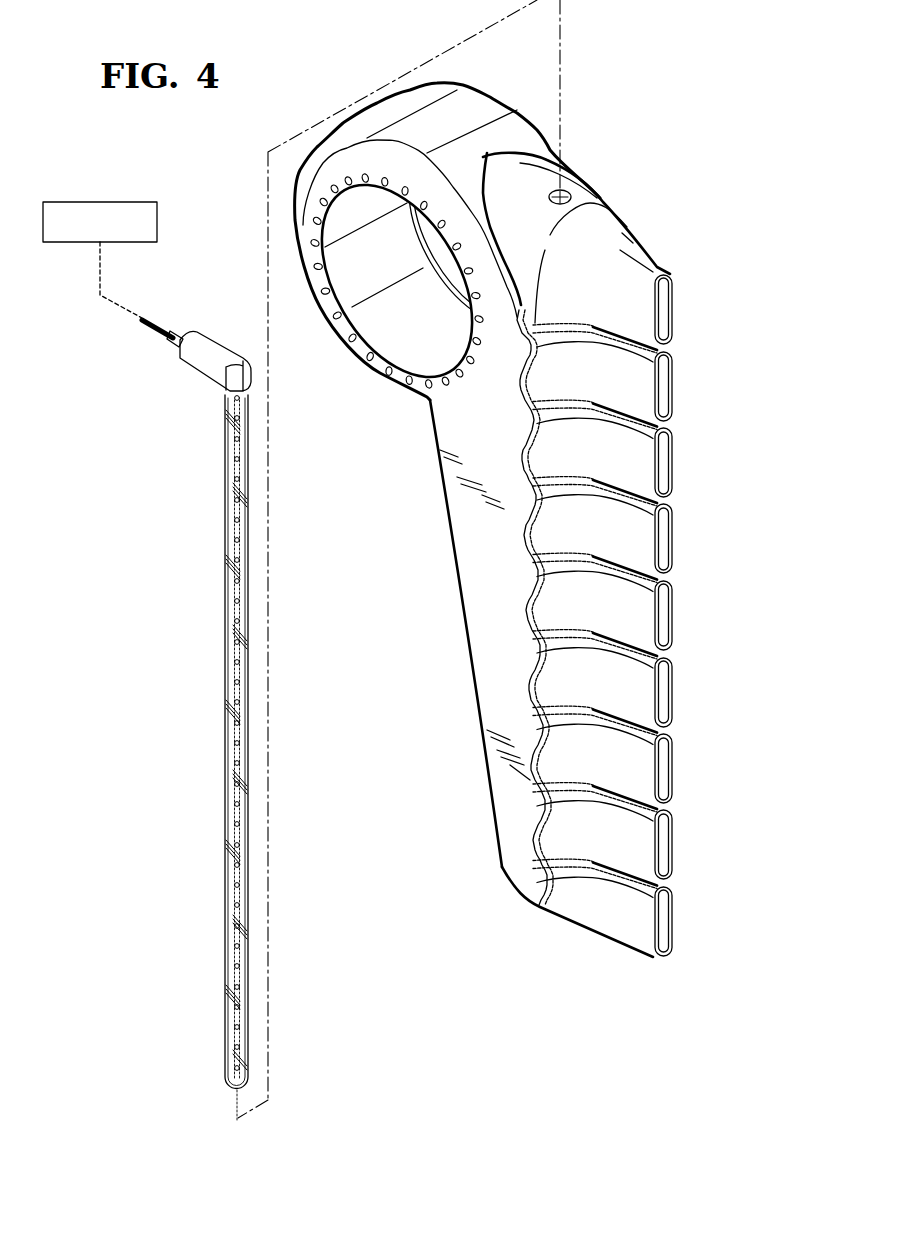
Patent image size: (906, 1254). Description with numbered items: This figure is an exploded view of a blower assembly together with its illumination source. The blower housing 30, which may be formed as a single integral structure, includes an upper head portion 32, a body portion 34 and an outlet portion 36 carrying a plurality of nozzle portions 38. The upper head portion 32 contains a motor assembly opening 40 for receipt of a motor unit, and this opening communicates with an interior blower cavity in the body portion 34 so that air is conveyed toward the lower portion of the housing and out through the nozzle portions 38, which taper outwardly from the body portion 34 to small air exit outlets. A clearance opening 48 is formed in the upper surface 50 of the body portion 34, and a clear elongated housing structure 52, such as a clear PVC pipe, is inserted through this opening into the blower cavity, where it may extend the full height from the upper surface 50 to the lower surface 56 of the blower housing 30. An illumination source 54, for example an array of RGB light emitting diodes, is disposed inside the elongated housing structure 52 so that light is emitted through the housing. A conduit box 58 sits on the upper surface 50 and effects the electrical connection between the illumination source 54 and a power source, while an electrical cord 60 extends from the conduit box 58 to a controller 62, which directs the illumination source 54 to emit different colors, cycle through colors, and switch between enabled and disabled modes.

The blower housing 30 is at (663, 240).
The upper head portion 32 is at (475, 105).
The body portion 34 is at (496, 647).
The outlet portion 36 is at (578, 902).
The nozzle portions 38 is at (631, 917).
The motor assembly opening 40 is at (334, 197).
The clearance opening 48 is at (565, 191).
The upper surface 50 is at (597, 199).
The elongated housing structure 52 is at (222, 877).
The illumination source 54 is at (231, 1028).
The lower surface 56 is at (524, 895).
The conduit box 58 is at (237, 362).
The electrical cord 60 is at (160, 337).
The controller 62 is at (157, 222).